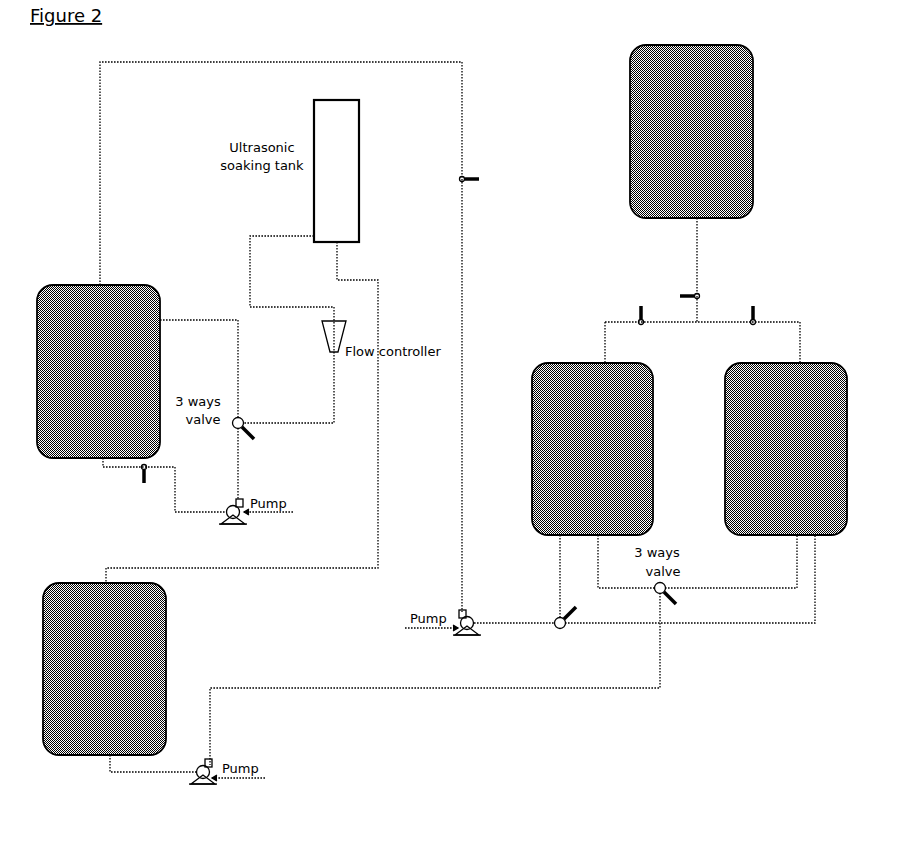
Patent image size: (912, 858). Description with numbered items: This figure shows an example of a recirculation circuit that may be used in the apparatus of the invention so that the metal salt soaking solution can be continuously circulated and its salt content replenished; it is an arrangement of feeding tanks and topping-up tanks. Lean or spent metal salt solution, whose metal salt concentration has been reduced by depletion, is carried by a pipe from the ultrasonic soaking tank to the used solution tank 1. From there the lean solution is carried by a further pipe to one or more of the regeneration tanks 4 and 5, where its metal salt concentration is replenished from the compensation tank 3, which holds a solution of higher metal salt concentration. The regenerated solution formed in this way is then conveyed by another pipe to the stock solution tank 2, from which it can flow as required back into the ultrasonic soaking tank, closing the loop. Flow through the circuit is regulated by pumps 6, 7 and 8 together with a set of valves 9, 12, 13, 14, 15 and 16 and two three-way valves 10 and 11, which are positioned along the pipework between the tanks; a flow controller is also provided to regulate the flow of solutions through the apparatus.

The used solution tank 1 is at (98, 371).
The stock solution tank 2 is at (104, 669).
The compensation tank 3 is at (691, 131).
The regeneration tank 4 is at (592, 449).
The regeneration tank 5 is at (786, 449).
The pump 6 is at (232, 505).
The pump 7 is at (201, 764).
The pump 8 is at (468, 618).
The valve 9 is at (144, 487).
The 3-way valve 10 is at (247, 420).
The 3-way valve 11 is at (679, 585).
The valve 12 is at (564, 628).
The valve 13 is at (457, 180).
The valve 14 is at (641, 326).
The valve 15 is at (699, 296).
The valve 16 is at (753, 326).